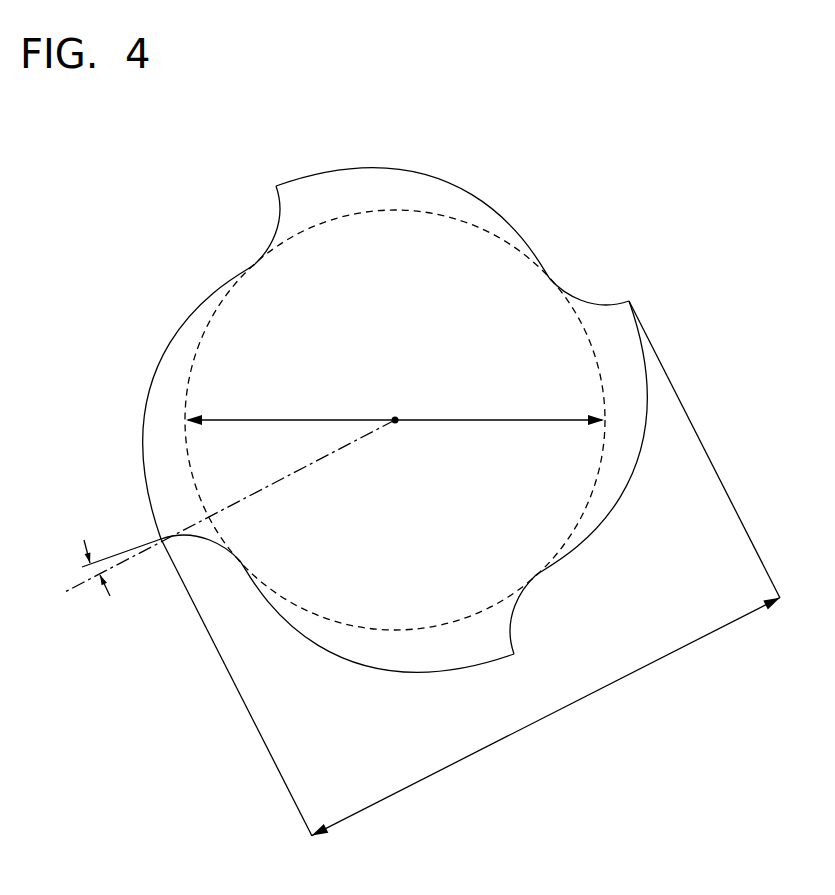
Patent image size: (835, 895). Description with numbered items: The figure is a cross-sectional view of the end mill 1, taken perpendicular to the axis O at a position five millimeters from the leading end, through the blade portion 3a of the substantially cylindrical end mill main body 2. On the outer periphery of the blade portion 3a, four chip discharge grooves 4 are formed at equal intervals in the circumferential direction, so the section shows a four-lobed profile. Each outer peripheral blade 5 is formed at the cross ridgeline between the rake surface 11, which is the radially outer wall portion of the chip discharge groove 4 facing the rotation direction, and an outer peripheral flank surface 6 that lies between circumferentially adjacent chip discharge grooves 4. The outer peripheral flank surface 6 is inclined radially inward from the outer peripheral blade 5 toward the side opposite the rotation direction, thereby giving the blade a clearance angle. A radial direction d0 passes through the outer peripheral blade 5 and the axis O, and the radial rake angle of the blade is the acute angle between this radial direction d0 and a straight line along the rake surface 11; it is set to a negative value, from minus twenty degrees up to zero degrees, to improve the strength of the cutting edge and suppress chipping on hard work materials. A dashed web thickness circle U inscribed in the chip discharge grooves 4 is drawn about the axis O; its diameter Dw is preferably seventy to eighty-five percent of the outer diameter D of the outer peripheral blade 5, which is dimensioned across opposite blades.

The end mill 1 is at (560, 183).
The end mill main body 2 is at (494, 202).
The blade portion 3a is at (157, 327).
The chip discharge groove 4 is at (240, 265).
The outer peripheral blade 5 is at (277, 185).
The outer peripheral flank surface 6 is at (292, 181).
The rake surface 11 is at (279, 207).
The web thickness Dw is at (395, 420).
The radial direction d0 is at (229, 506).
The outer diameter D is at (470, 568).
The web thickness circle U is at (448, 144).